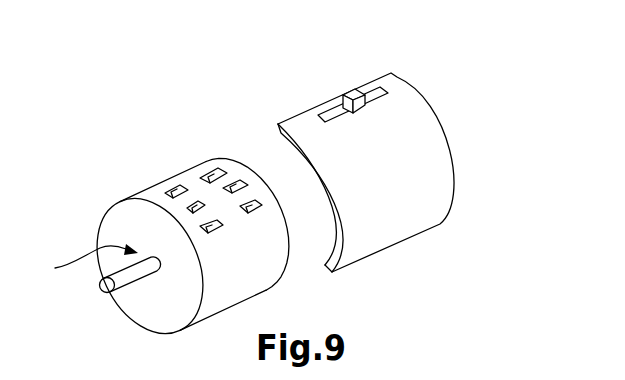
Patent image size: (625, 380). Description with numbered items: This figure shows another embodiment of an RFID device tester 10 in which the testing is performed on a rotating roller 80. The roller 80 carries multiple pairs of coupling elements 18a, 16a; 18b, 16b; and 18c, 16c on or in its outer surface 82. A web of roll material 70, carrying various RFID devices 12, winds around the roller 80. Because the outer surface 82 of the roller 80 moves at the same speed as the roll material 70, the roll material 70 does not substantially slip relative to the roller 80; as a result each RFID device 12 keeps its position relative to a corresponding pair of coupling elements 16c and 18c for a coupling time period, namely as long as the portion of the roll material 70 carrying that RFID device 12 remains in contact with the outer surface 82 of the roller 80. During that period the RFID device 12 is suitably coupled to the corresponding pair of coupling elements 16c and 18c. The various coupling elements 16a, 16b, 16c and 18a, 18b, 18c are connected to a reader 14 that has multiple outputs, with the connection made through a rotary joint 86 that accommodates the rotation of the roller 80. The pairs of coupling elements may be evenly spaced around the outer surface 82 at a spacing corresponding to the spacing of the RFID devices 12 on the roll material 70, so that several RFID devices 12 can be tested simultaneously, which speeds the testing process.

The tester 10 is at (113, 180).
The RFID device 12 is at (406, 74).
The reader 14 is at (102, 289).
The coupling element 16a is at (173, 189).
The coupling element 16b is at (189, 209).
The coupling element 16c is at (212, 225).
The coupling element 18a is at (212, 174).
The coupling element 18b is at (239, 184).
The coupling element 18c is at (257, 207).
The roll material 70 is at (393, 210).
The roller 80 is at (158, 310).
The outer surface 82 is at (202, 307).
The rotary joint 86 is at (80, 263).